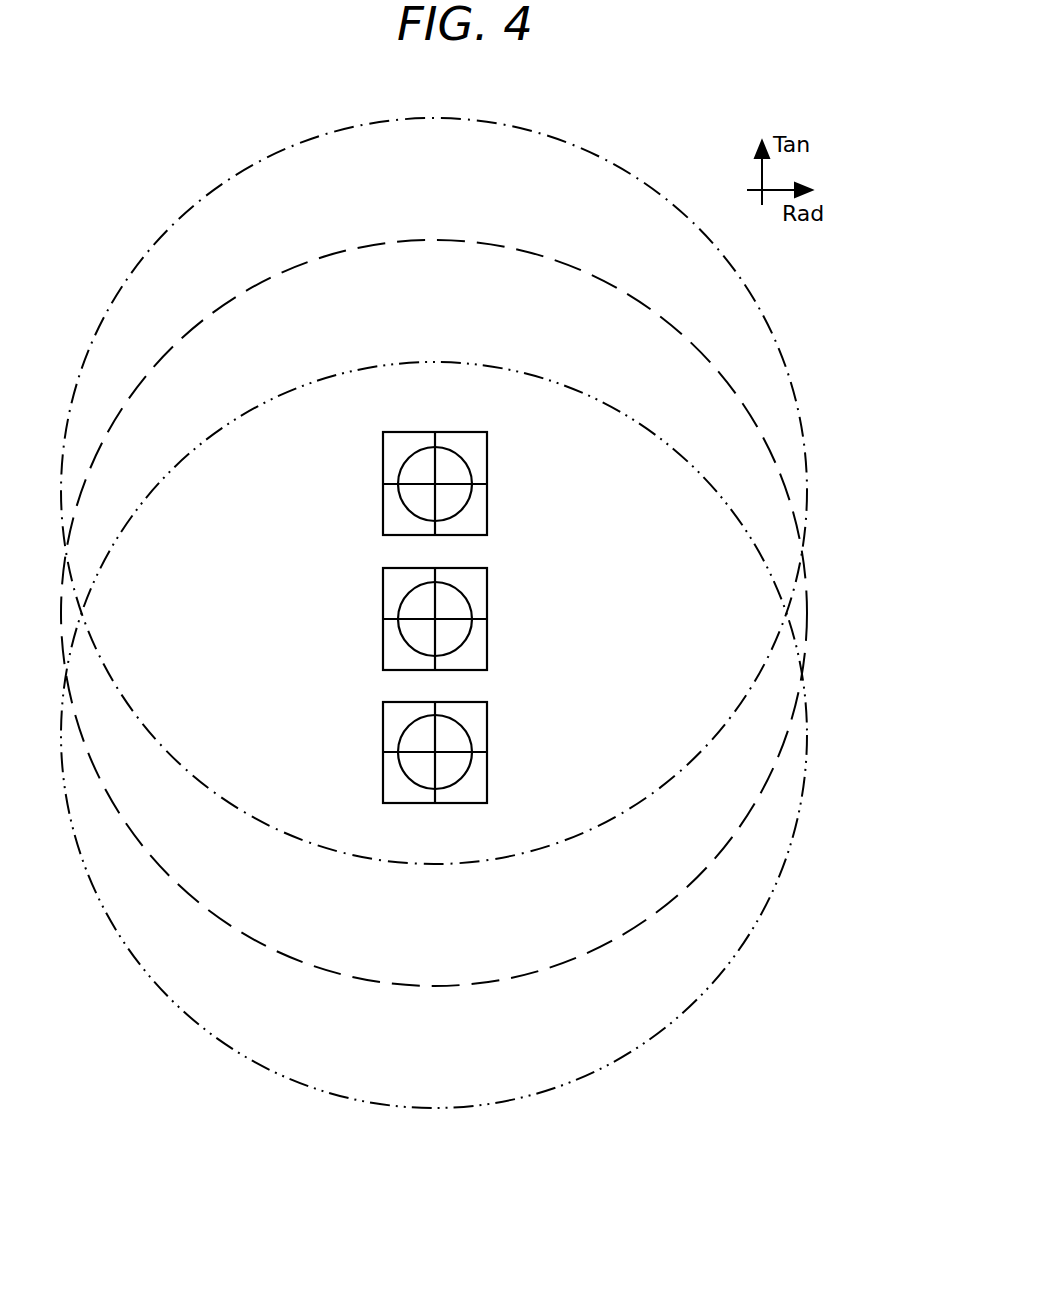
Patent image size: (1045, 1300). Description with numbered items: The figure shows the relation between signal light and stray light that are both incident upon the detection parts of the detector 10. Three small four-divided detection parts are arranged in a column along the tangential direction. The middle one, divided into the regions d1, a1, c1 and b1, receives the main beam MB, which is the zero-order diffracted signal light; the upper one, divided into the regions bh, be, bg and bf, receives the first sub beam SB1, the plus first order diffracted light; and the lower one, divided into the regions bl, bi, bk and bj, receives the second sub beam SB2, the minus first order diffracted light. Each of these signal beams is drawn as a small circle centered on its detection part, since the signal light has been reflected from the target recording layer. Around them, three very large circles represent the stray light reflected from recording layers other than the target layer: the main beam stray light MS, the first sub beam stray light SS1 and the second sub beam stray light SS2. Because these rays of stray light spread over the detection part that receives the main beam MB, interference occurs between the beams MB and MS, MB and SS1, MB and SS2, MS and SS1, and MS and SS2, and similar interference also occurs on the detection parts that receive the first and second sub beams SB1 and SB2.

The detector 10 is at (365, 488).
The first sub beam stray light SS1 is at (757, 299).
The main beam stray light MS is at (806, 600).
The second sub beam stray light SS2 is at (778, 882).
The first sub beam SB1 is at (470, 462).
The main beam MB is at (470, 598).
The second sub beam SB2 is at (470, 733).
The detection part region bh is at (399, 445).
The detection part region be is at (473, 445).
The detection part region bg is at (399, 520).
The detection part region bf is at (474, 520).
The detection part region d1 is at (399, 581).
The detection part region a1 is at (474, 581).
The detection part region c1 is at (399, 657).
The detection part region b1 is at (474, 657).
The detection part region bl is at (396, 715).
The detection part region bi is at (474, 715).
The detection part region bk is at (399, 789).
The detection part region bj is at (474, 789).